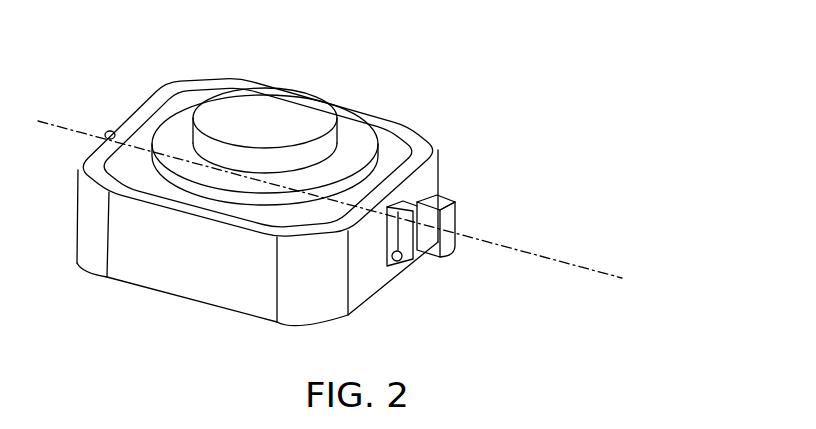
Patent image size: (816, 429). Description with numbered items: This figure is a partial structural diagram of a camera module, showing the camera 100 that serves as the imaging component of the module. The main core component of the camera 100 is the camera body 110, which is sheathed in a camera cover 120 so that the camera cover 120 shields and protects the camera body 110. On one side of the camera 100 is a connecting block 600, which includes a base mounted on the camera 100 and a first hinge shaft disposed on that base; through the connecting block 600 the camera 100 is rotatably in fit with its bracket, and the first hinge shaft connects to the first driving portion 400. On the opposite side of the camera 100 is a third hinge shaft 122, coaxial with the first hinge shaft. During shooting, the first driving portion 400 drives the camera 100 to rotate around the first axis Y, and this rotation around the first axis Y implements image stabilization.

The camera 100 is at (320, 202).
The camera body 110 is at (340, 116).
The camera cover 120 is at (443, 150).
The third hinge shaft 122 is at (108, 134).
The first driving portion 400 is at (453, 203).
The connecting block 600 is at (441, 260).
The first axis Y is at (578, 266).